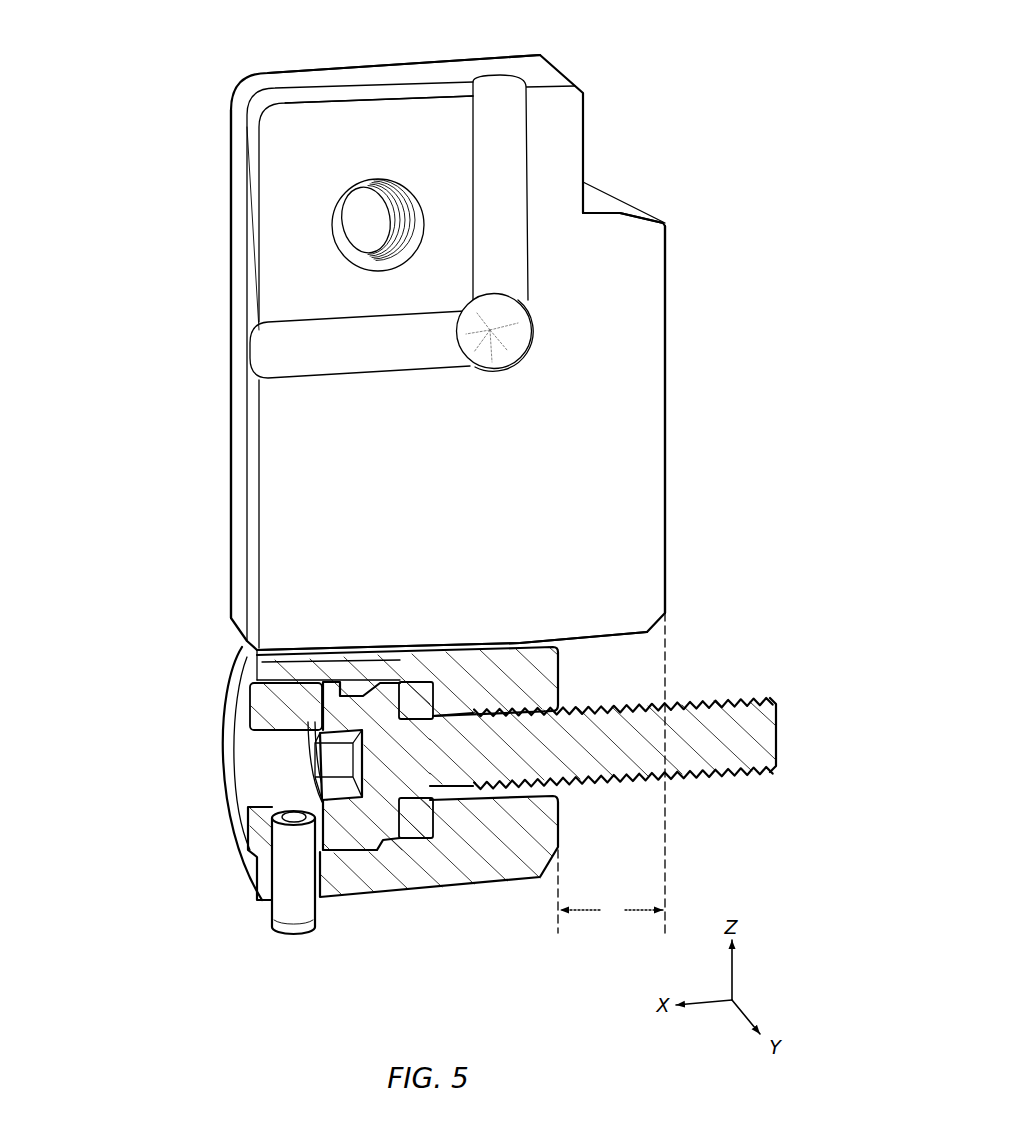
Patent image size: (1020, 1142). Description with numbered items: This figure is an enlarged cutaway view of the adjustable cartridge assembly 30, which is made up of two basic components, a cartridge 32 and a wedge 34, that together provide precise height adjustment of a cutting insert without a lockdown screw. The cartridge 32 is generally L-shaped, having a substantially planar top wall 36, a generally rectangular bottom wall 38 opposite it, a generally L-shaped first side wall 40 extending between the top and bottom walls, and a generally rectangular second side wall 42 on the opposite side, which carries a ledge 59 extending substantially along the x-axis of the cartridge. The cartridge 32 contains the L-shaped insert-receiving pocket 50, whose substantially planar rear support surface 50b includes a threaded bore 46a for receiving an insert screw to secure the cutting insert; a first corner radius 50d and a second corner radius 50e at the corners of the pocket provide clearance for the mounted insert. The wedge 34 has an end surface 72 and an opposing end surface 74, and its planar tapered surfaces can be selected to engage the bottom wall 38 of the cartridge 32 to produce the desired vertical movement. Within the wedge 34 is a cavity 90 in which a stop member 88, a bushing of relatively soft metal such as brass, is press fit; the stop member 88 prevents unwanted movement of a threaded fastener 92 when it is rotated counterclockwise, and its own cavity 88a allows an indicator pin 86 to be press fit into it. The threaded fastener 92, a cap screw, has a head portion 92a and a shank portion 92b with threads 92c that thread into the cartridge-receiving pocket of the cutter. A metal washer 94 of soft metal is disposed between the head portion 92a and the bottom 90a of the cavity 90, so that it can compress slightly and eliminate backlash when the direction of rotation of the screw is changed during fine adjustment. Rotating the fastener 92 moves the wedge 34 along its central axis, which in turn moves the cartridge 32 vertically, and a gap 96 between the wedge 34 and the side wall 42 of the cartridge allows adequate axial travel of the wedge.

The adjustable cartridge assembly 30 is at (116, 242).
The cartridge 32 is at (172, 124).
The wedge 34 is at (213, 795).
The top wall 36 is at (421, 57).
The bottom wall 38 is at (597, 647).
The first side wall 40 is at (229, 438).
The second side wall 42 is at (673, 395).
The threaded bore 46a is at (345, 210).
The insert-receiving pocket 50 is at (297, 202).
The rear support surface 50b is at (299, 137).
The first corner radius 50d is at (278, 352).
The second corner radius 50e is at (505, 342).
The ledge 59 is at (595, 200).
The end surface 72 is at (238, 722).
The opposing end surface 74 is at (565, 822).
The indicator pin 86 is at (293, 918).
The stop member 88 is at (265, 887).
The cavity 88a is at (288, 812).
The cavity 90 is at (340, 838).
The bottom of the cavity 90a is at (405, 688).
The threaded fastener 92 is at (417, 817).
The head portion 92a is at (350, 713).
The shank portion 92b is at (688, 748).
The threads 92c is at (702, 775).
The metal washer 94 is at (380, 810).
The gap 96 is at (611, 773).